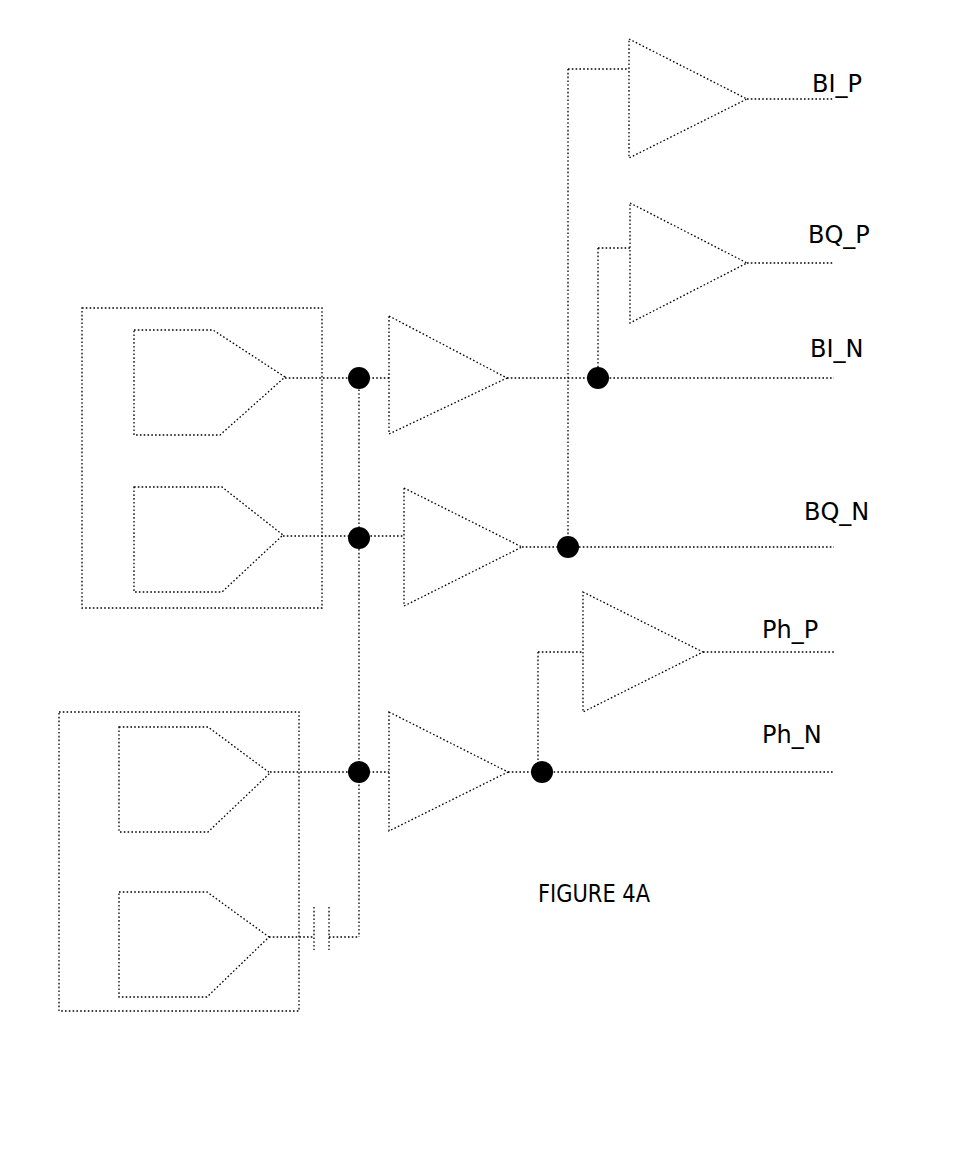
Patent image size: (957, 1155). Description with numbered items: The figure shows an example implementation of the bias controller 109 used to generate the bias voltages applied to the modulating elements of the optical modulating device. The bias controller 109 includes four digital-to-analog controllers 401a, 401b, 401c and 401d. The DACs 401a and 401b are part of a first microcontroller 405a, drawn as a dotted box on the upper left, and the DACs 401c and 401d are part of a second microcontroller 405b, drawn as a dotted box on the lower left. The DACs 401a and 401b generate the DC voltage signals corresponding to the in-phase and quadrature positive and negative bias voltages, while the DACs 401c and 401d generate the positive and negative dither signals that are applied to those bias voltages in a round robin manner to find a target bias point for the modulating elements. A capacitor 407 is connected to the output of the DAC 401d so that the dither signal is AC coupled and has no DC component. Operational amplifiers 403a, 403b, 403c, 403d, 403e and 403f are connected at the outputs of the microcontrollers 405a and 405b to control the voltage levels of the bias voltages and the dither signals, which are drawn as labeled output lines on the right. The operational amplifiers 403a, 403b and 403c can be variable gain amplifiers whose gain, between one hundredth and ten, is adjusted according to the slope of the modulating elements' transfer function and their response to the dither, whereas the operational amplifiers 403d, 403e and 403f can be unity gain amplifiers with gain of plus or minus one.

The bias controller 109 is at (477, 118).
The digital-to-analog controller 401a is at (208, 330).
The digital-to-analog controller 401b is at (180, 592).
The digital-to-analog controller 401c is at (178, 727).
The digital-to-analog controller 401d is at (172, 998).
The operational amplifier 403a is at (453, 348).
The operational amplifier 403b is at (457, 512).
The operational amplifier 403c is at (466, 750).
The operational amplifier 403d is at (637, 618).
The operational amplifier 403e is at (678, 230).
The operational amplifier 403f is at (675, 63).
The first microcontroller 405a is at (112, 308).
The second microcontroller 405b is at (88, 1011).
The capacitor 407 is at (324, 962).